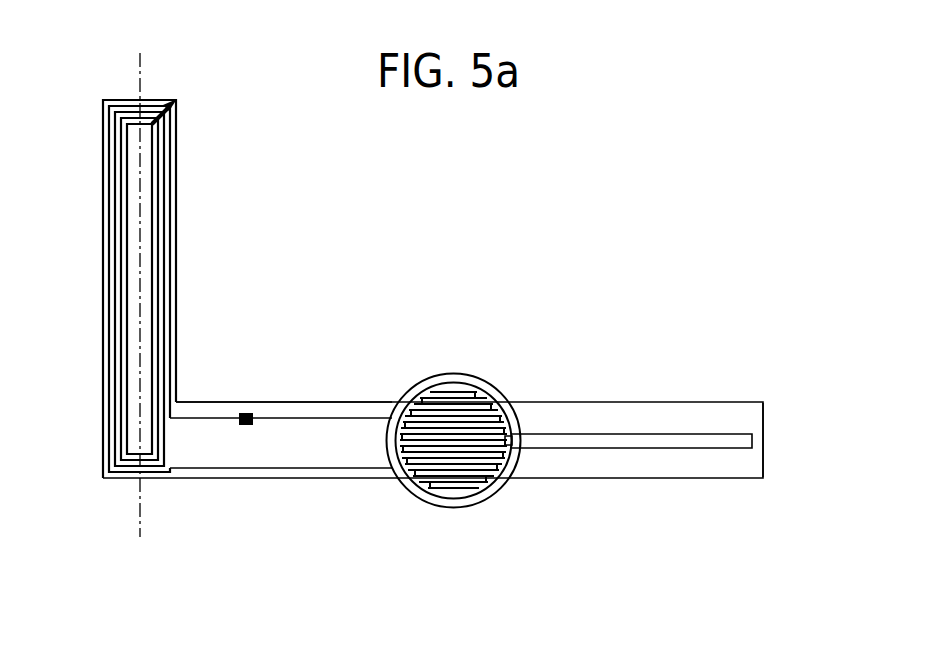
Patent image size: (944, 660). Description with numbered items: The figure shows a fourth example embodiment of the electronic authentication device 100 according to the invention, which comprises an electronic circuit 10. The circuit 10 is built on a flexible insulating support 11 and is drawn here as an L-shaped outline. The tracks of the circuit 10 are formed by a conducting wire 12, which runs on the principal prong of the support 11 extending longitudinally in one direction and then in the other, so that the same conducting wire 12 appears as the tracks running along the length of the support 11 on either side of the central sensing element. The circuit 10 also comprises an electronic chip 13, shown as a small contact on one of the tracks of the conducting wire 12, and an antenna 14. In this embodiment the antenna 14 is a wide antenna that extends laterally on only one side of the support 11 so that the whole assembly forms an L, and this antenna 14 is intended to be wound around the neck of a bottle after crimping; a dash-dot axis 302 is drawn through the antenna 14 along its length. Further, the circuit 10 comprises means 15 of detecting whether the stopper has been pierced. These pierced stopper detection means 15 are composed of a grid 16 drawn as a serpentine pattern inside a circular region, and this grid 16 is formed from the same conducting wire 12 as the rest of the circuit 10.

The electronic authentication device 100 is at (670, 258).
The electronic circuit 10 is at (778, 416).
The flexible insulating support 11 is at (723, 420).
The conducting wire 12 is at (325, 420).
The electronic chip 13 is at (239, 400).
The antenna 14 is at (117, 90).
The pierced stopper detection means 15 is at (428, 366).
The grid 16 is at (443, 465).
The centerline axis 302 is at (131, 506).